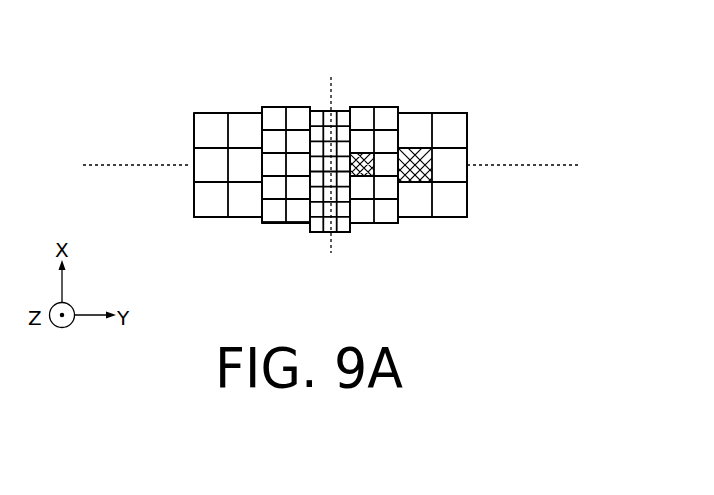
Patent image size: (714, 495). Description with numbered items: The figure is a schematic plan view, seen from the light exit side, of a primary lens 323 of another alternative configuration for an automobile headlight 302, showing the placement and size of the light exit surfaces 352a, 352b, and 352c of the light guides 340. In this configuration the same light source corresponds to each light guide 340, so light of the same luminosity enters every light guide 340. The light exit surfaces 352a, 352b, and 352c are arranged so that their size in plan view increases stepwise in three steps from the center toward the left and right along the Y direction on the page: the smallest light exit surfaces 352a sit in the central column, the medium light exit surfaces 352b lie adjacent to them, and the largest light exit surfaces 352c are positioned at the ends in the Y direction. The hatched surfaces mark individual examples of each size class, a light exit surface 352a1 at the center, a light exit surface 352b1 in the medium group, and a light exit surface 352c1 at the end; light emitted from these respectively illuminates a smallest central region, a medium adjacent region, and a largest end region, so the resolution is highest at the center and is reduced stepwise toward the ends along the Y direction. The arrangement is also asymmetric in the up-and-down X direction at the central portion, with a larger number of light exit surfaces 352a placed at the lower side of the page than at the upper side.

The headlight 302 is at (364, 90).
The primary lens 323 is at (471, 96).
The light guide 340 is at (207, 197).
The light exit surface 352a is at (315, 213).
The light exit surface 352a1 is at (334, 158).
The light exit surface 352b is at (387, 208).
The light exit surface 352b1 is at (362, 170).
The light exit surface 352c is at (450, 203).
The light exit surface 352c1 is at (417, 168).